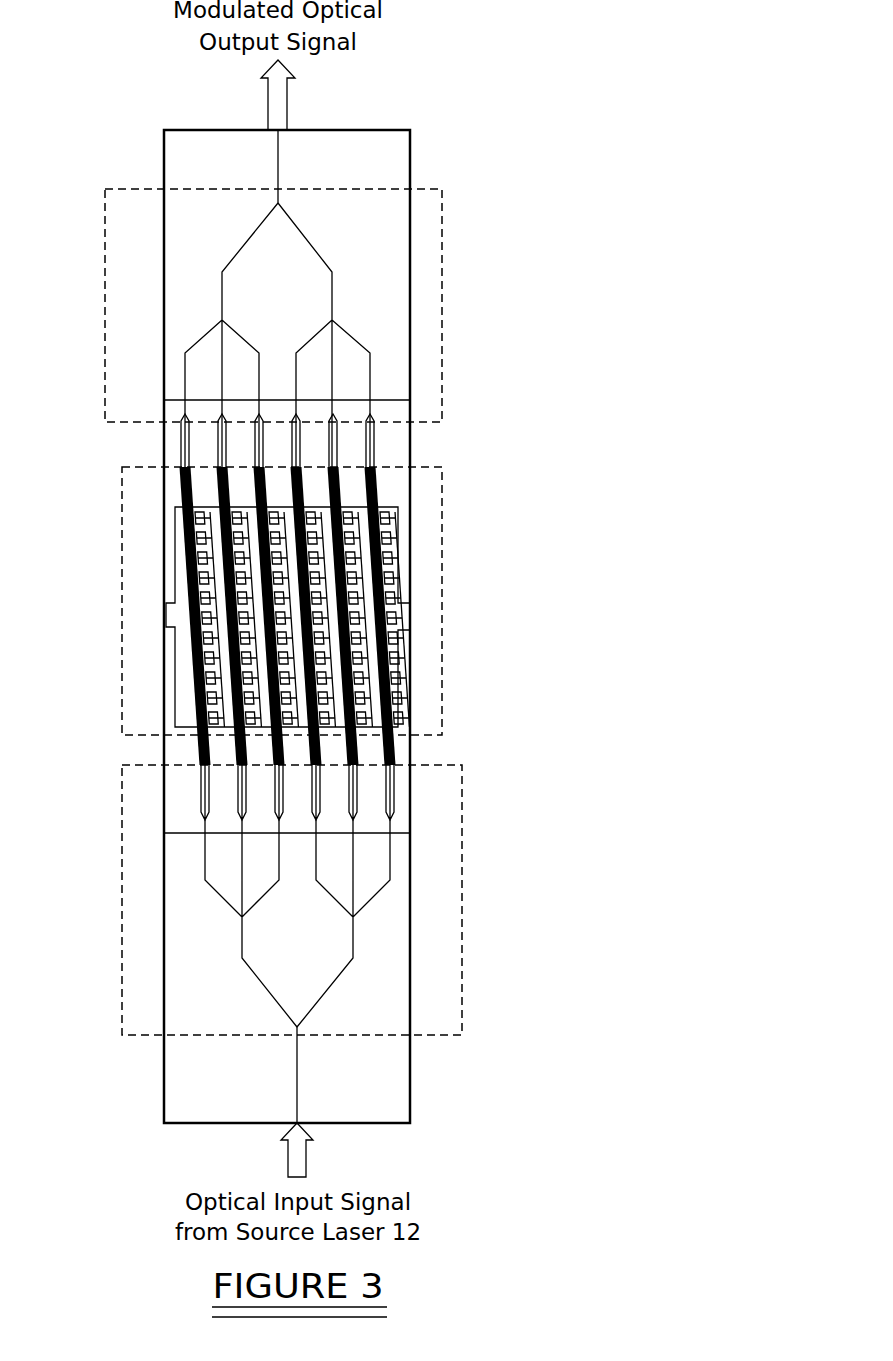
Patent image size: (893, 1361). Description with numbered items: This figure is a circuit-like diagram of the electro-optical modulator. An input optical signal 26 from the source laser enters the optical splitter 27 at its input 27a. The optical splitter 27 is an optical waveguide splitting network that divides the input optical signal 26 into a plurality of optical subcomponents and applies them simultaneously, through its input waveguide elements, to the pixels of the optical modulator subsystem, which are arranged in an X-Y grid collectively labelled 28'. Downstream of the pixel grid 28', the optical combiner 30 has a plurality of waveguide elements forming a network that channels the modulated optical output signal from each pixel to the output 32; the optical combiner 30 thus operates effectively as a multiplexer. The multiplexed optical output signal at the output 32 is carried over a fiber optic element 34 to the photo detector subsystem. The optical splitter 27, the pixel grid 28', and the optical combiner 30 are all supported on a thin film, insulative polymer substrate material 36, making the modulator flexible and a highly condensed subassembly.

The input optical signal 26 is at (288, 1137).
The optical splitter 27 is at (462, 861).
The input 27a is at (298, 1022).
The X-Y grid of pixels 28' is at (350, 617).
The optical combiner 30 is at (442, 290).
The output 32 is at (277, 207).
The fiber optic element 34 is at (278, 148).
The substrate material 36 is at (193, 1073).